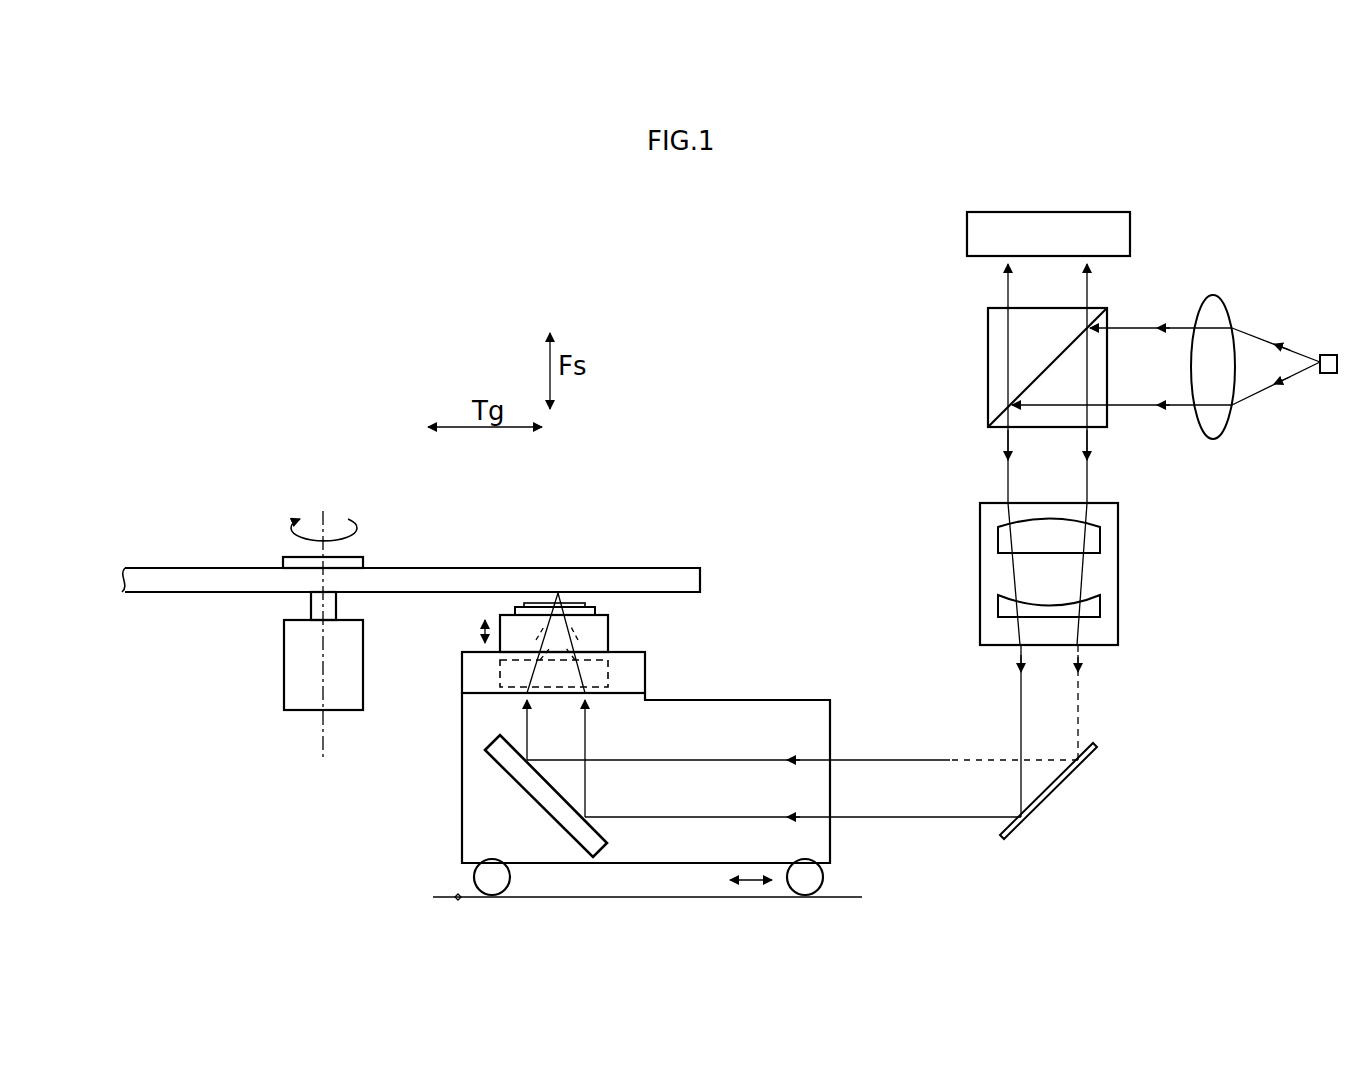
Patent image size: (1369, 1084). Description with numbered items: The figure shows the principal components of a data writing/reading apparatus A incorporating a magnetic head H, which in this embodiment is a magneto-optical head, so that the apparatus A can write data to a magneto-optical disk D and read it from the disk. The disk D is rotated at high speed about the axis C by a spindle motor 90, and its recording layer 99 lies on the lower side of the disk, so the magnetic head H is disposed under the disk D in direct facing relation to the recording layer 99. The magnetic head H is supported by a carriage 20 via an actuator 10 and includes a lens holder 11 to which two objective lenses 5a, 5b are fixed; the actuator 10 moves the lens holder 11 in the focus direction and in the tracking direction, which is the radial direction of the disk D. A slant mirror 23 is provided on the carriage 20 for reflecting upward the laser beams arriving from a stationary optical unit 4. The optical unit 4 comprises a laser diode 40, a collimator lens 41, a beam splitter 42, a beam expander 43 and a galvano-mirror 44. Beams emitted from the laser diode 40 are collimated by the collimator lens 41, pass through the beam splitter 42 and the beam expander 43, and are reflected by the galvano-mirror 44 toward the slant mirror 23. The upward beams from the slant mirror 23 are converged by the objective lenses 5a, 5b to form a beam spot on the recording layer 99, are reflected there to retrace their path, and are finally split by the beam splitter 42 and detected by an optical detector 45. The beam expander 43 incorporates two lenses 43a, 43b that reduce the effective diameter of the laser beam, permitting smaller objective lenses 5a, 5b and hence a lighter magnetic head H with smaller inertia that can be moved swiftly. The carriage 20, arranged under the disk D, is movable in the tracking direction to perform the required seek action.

The optical unit 4 is at (944, 339).
The objective lens 5a is at (573, 698).
The objective lens 5b is at (545, 676).
The actuator 10 is at (625, 668).
The lens holder 11 is at (608, 636).
The carriage 20 is at (772, 700).
The slant mirror 23 is at (588, 845).
The laser diode 40 is at (1330, 357).
The collimator lens 41 is at (1215, 298).
The beam splitter 42 is at (1105, 306).
The beam expander 43 is at (1089, 571).
The lens 43a is at (1095, 535).
The lens 43b is at (1095, 606).
The galvano-mirror 44 is at (1093, 750).
The optical detector 45 is at (1097, 218).
The spindle motor 90 is at (294, 683).
The recording layer 99 is at (465, 603).
The data writing/reading apparatus A is at (270, 262).
The axis C is at (320, 518).
The magneto-optical disk D is at (412, 570).
The magnetic head H is at (622, 616).